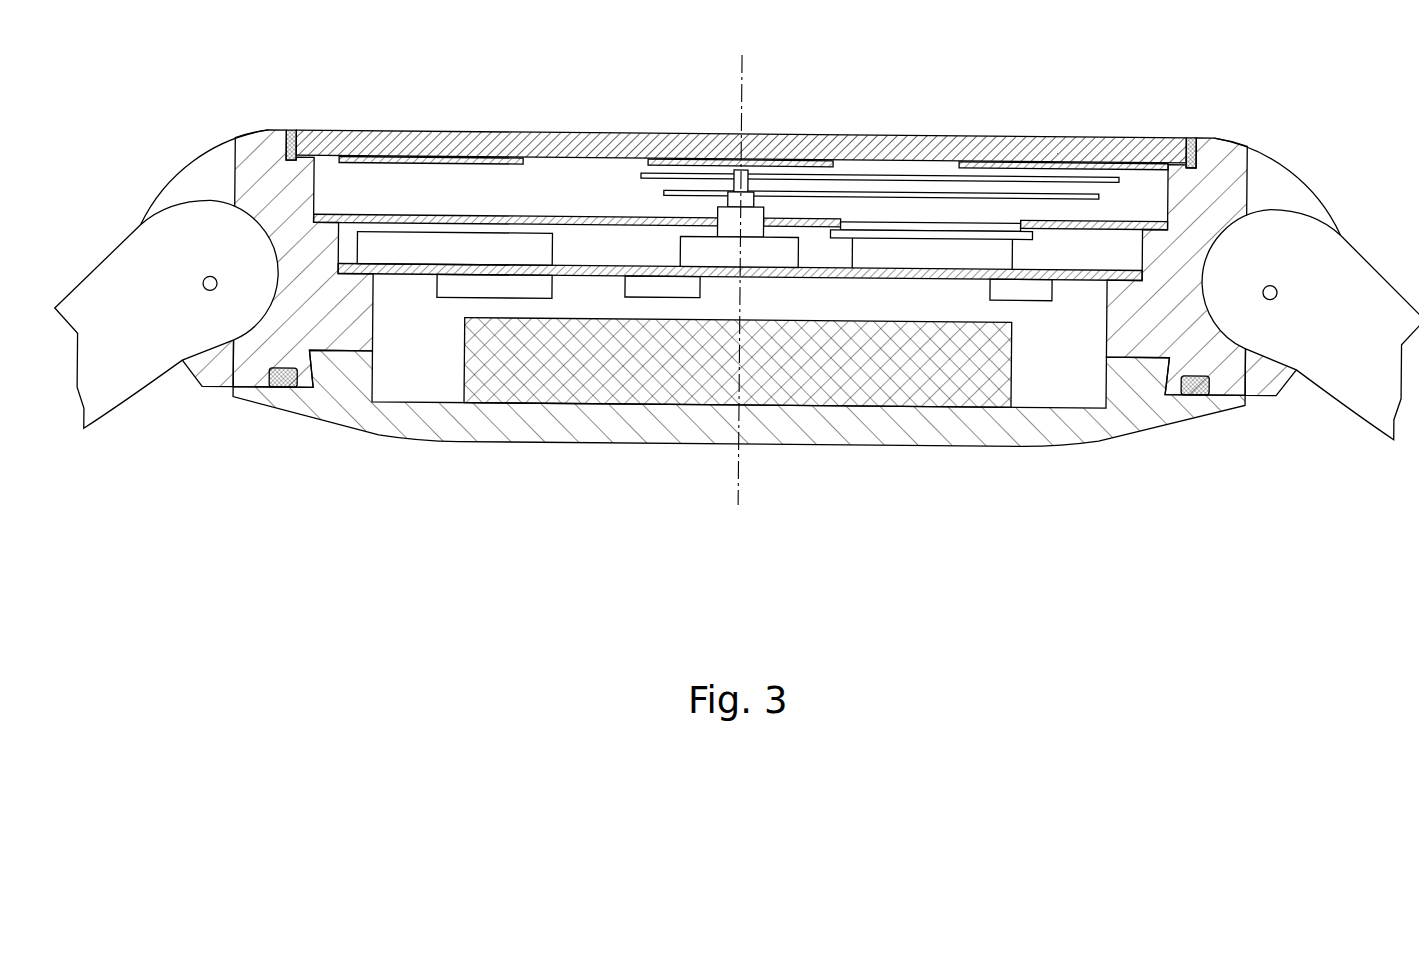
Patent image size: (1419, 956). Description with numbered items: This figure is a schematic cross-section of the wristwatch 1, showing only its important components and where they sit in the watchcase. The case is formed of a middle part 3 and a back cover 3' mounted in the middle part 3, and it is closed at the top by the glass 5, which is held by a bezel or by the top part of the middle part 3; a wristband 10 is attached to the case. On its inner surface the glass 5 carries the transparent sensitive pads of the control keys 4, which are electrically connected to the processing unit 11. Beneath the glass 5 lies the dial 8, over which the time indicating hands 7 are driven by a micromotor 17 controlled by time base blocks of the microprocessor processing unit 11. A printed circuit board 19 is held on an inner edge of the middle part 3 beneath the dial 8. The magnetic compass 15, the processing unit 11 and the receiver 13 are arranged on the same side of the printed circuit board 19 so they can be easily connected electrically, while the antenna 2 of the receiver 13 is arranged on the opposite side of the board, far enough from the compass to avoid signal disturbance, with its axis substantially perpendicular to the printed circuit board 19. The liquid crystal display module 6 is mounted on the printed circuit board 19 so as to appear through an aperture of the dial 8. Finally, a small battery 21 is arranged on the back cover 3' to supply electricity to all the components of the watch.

The wristwatch 1 is at (1270, 79).
The antenna 2 is at (482, 252).
The middle part 3 is at (740, 240).
The back cover 3' is at (738, 419).
The control keys 4 is at (388, 161).
The glass 5 is at (1012, 148).
The liquid crystal display module 6 is at (898, 229).
The hands 7 is at (827, 194).
The dial 8 is at (338, 190).
The wristband 10 is at (1343, 279).
The microprocessor processing unit 11 is at (680, 286).
The receiver 13 is at (528, 289).
The magnetic compass 15 is at (1042, 288).
The micromotor 17 is at (690, 251).
The printed circuit board 19 is at (1118, 273).
The battery 21 is at (845, 391).